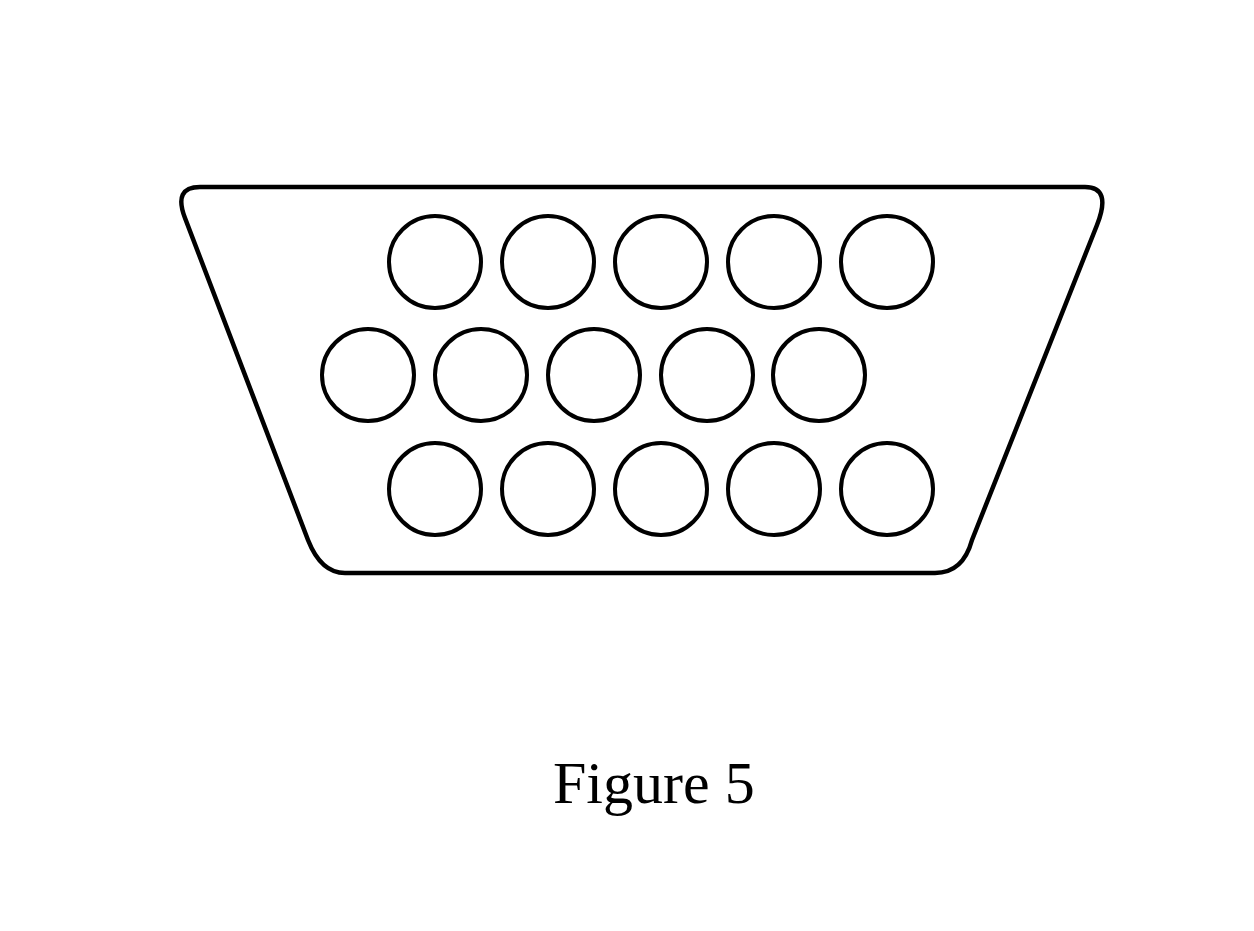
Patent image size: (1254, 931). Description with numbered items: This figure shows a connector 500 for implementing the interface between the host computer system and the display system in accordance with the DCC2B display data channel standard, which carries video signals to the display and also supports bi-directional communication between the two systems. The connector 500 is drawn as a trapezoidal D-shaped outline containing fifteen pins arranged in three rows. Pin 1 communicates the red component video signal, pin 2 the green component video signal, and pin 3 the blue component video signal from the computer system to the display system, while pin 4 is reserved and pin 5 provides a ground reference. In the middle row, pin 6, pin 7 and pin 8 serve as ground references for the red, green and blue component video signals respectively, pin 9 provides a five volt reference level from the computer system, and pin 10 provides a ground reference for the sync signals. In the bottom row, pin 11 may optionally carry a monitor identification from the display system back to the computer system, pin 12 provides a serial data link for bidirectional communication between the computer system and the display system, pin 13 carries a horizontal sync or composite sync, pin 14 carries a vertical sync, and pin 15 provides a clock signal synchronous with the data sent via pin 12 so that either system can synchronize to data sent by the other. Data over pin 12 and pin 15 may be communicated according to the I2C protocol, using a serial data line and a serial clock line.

The connector 500 is at (1042, 188).
The pin 1 is at (435, 262).
The pin 2 is at (548, 262).
The pin 3 is at (661, 262).
The pin 4 is at (774, 262).
The pin 5 is at (887, 262).
The pin 6 is at (368, 375).
The pin 7 is at (481, 375).
The pin 8 is at (594, 375).
The pin 9 is at (707, 375).
The pin 10 is at (819, 375).
The pin 11 is at (435, 489).
The pin 12 is at (548, 489).
The pin 13 is at (661, 489).
The pin 14 is at (774, 489).
The pin 15 is at (887, 489).